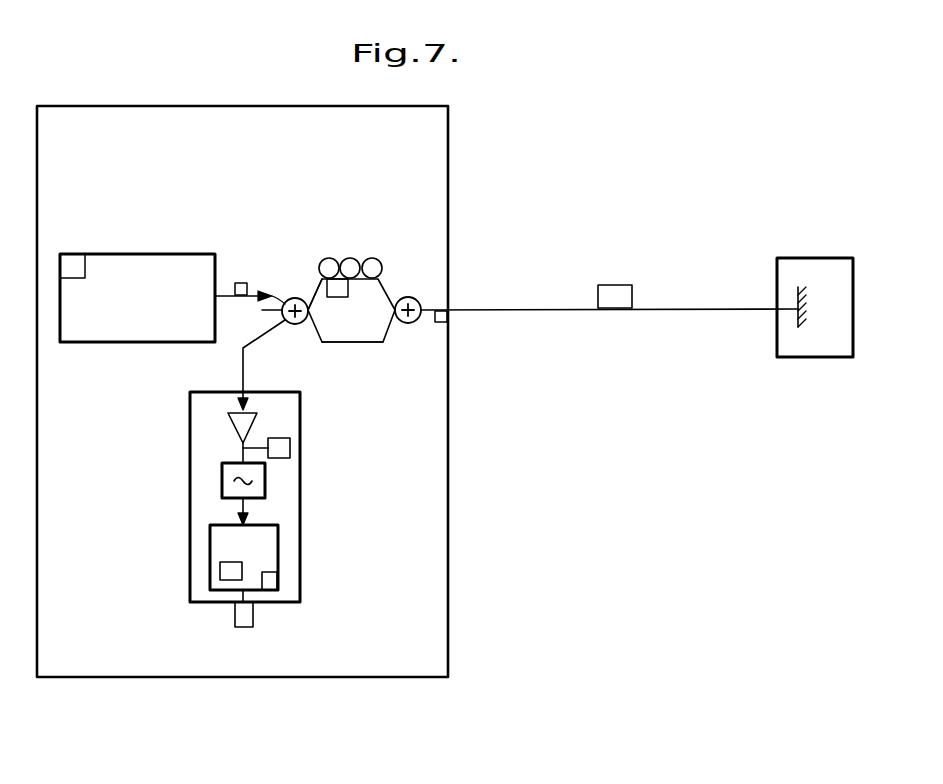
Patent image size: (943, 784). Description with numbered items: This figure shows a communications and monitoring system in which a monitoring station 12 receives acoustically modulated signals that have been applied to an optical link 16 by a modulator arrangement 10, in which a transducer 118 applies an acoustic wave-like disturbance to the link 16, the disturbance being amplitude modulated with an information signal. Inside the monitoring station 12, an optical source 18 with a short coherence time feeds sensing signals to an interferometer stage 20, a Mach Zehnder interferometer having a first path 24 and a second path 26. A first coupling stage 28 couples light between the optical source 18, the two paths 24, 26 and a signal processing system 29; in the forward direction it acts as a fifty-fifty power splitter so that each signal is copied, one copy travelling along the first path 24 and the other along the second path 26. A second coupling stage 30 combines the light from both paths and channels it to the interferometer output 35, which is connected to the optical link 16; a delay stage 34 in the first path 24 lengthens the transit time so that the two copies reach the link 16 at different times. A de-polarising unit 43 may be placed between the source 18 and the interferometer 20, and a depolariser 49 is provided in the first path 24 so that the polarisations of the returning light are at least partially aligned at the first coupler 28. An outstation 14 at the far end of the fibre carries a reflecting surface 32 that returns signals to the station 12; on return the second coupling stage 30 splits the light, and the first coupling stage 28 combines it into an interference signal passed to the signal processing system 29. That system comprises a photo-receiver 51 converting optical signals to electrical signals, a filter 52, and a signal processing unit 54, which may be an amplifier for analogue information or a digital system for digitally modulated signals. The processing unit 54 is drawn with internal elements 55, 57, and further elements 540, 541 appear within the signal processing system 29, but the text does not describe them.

The modulator arrangement 10 is at (613, 285).
The monitoring station 12 is at (277, 664).
The outstation 14 is at (815, 348).
The optical link 16 is at (710, 310).
The optical source 18 is at (173, 254).
The transducer 118 is at (68, 254).
The interferometer stage 20 is at (381, 356).
The first path 24 is at (320, 280).
The second path 26 is at (388, 333).
The first coupling stage 28 is at (294, 325).
The signal processing system 29 is at (205, 612).
The second summing point 30 is at (412, 298).
The fixed mounting 32 is at (795, 296).
The coils 34 is at (371, 258).
The output element 35 is at (447, 316).
The de-polarising unit 43 is at (243, 283).
The depolariser 49 is at (337, 297).
The photo-receiver 51 is at (236, 424).
The filter 52 is at (228, 483).
The signal processing unit 54 is at (267, 528).
The modulator element 55 is at (270, 580).
The modulator element 57 is at (228, 572).
The control element 540 is at (288, 448).
The output element 541 is at (245, 616).